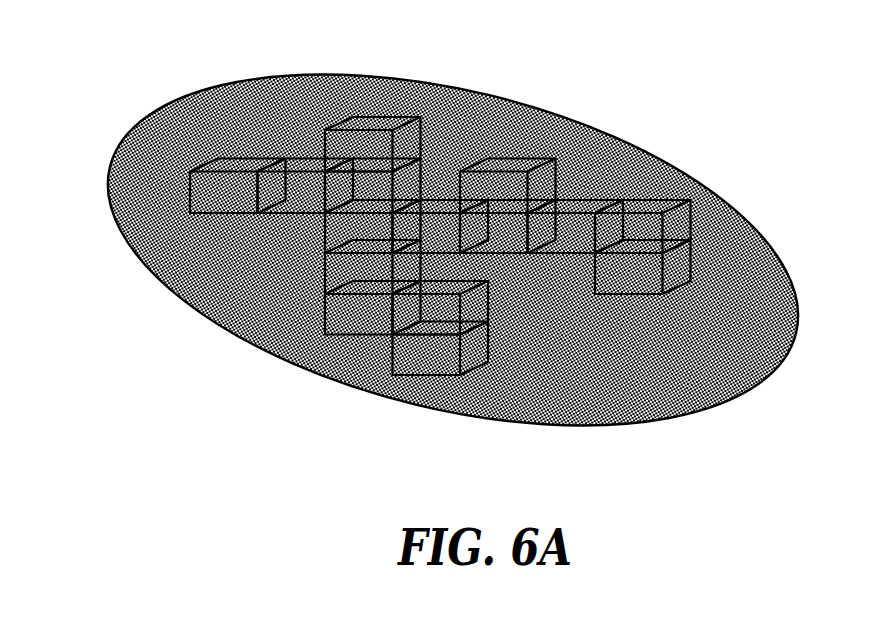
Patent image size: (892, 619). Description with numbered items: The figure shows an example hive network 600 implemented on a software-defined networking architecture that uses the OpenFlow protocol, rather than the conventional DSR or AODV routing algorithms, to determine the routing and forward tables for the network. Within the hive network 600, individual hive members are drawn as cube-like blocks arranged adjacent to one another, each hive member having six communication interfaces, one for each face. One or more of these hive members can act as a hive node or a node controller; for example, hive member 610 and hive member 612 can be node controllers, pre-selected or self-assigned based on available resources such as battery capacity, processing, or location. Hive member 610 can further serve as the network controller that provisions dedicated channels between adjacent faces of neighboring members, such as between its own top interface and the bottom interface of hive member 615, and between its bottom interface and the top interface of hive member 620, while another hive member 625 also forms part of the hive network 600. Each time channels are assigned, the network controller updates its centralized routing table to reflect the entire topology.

The hive network 600 is at (222, 325).
The hive member 610 is at (413, 182).
The hive member 612 is at (503, 253).
The hive member 615 is at (317, 143).
The hive member 620 is at (325, 229).
The cube 625 is at (303, 192).